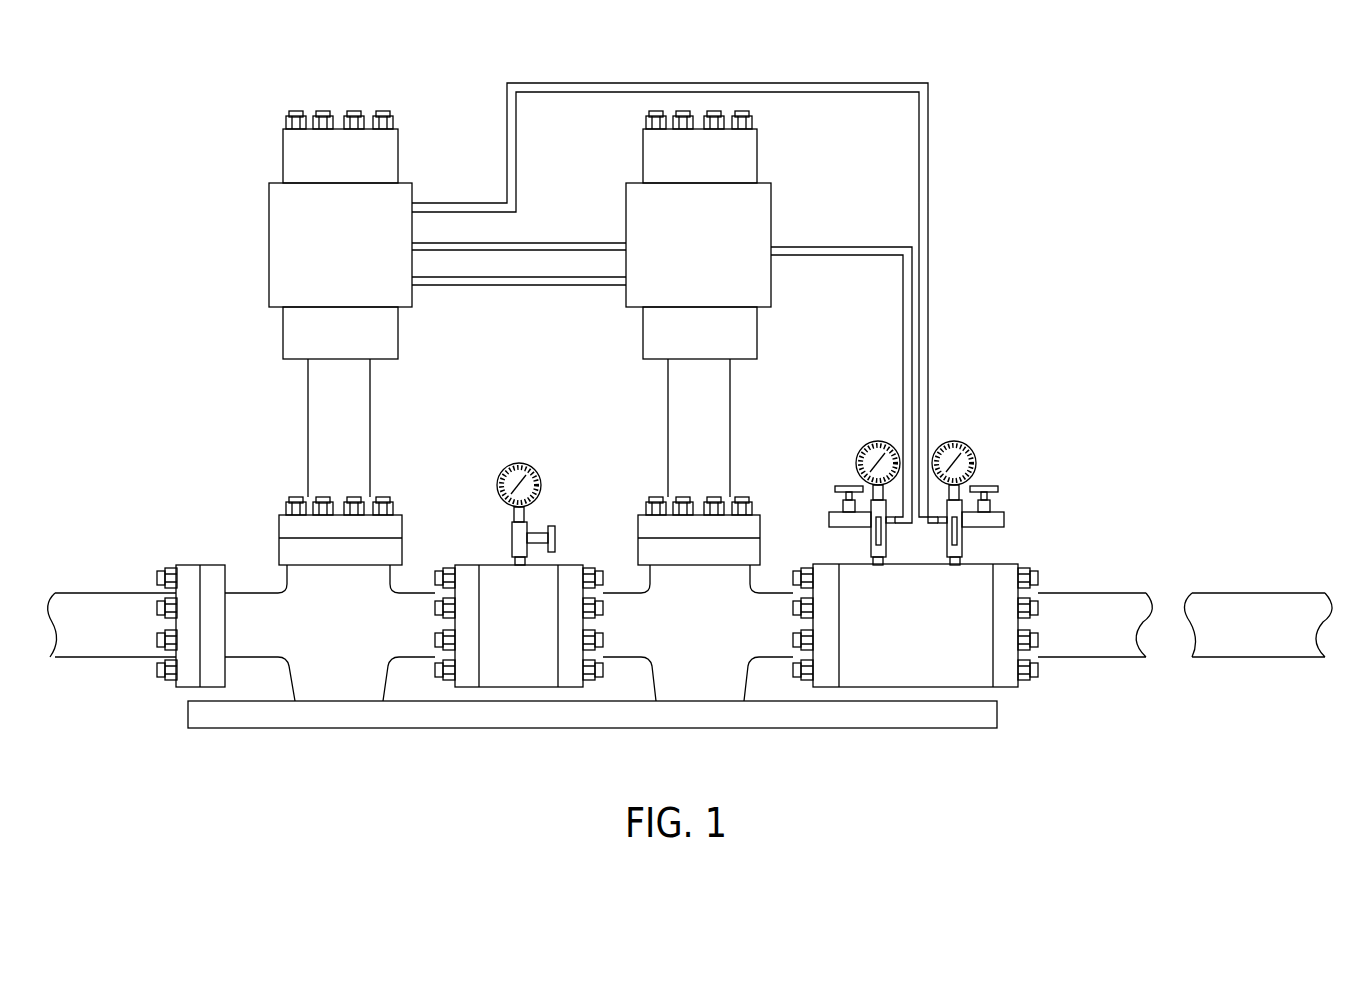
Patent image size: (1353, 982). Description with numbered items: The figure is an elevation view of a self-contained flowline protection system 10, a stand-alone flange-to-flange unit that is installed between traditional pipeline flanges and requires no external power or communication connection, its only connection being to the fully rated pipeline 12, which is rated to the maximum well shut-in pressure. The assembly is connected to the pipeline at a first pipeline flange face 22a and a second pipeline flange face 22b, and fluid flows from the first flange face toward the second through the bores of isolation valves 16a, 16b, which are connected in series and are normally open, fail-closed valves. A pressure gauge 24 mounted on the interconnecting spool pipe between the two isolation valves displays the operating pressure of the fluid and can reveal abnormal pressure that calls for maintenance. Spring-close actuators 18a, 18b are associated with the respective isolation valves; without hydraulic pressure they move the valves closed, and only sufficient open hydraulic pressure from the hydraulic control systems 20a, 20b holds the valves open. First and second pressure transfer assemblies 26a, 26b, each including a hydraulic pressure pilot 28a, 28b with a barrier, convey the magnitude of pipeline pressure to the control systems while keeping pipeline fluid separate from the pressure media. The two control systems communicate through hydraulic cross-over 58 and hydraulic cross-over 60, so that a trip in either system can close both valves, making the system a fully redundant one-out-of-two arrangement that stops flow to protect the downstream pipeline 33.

The flowline protection system 10 is at (988, 68).
The fully rated pipeline 12 is at (1082, 606).
The first isolation valve 16a is at (325, 687).
The second isolation valve 16b is at (710, 687).
The first actuator 18a is at (305, 160).
The second actuator 18b is at (740, 160).
The first hydraulic control system 20a is at (287, 252).
The second hydraulic control system 20b is at (750, 222).
The first pipeline flange face 22a is at (214, 572).
The second pipeline flange face 22b is at (912, 665).
The pressure gauge 24 is at (545, 487).
The first pressure transfer assembly 26a is at (978, 438).
The second pressure transfer assembly 26b is at (852, 430).
The hydraulic pressure pilot 28a is at (965, 540).
The hydraulic pressure pilot 28b is at (868, 540).
The downstream pipeline 33 is at (1232, 606).
The hydraulic cross-over 58 is at (535, 240).
The hydraulic cross-over 60 is at (540, 288).